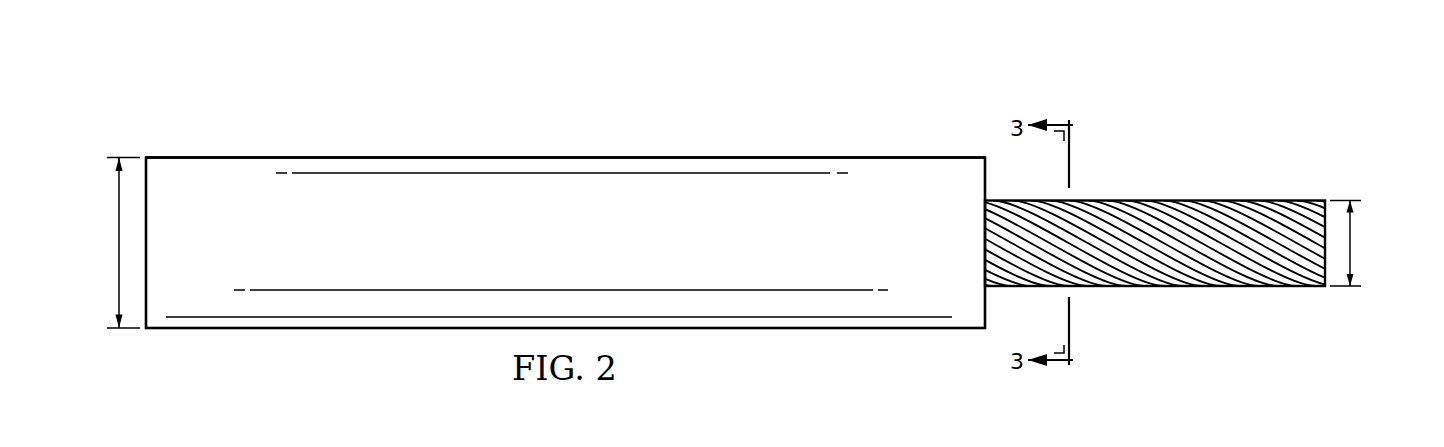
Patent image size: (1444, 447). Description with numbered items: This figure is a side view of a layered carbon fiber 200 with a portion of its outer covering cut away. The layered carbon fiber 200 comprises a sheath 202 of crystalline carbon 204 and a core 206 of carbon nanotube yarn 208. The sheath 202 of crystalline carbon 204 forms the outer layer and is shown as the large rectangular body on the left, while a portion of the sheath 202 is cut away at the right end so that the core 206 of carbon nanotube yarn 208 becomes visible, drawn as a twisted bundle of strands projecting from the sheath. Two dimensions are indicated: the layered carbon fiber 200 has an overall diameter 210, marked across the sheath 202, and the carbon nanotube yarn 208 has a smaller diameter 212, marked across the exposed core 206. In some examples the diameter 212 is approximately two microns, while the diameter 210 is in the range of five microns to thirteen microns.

The layered carbon fiber 200 is at (297, 85).
The sheath 202 is at (404, 149).
The crystalline carbon 204 is at (565, 157).
The core 206 is at (1153, 199).
The carbon nanotube yarn 208 is at (1252, 227).
The diameter 210 is at (118, 243).
The diameter 212 is at (1353, 243).